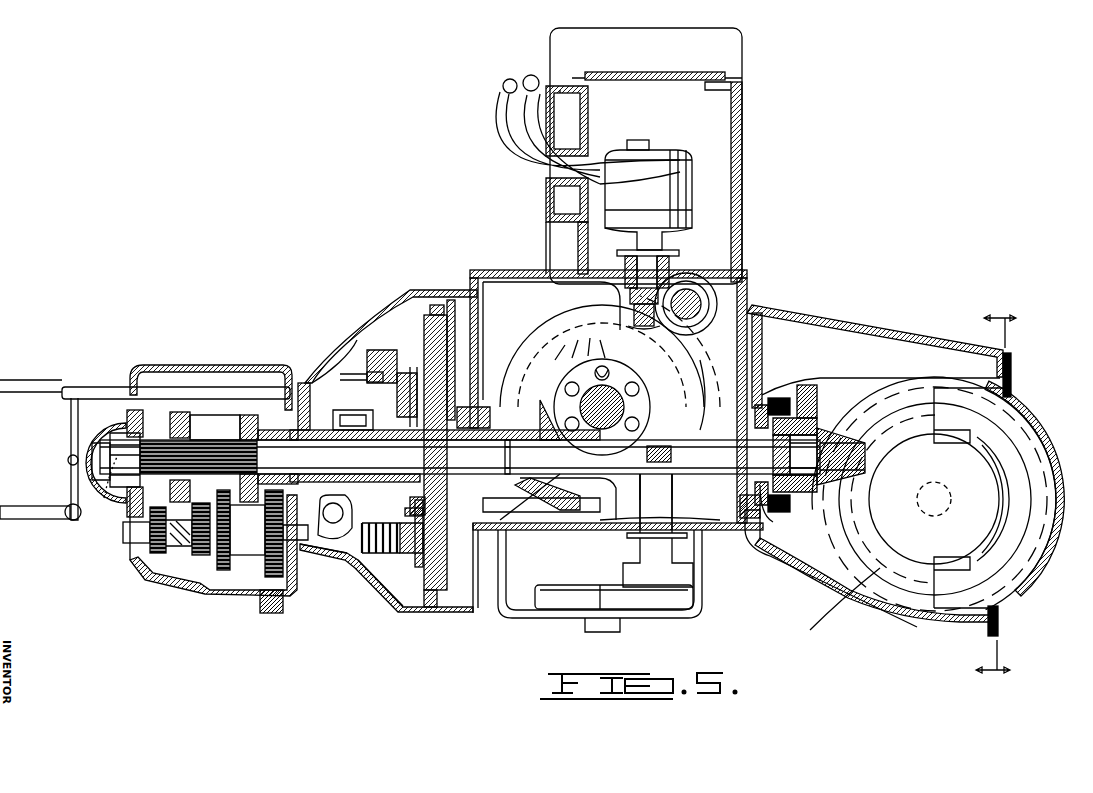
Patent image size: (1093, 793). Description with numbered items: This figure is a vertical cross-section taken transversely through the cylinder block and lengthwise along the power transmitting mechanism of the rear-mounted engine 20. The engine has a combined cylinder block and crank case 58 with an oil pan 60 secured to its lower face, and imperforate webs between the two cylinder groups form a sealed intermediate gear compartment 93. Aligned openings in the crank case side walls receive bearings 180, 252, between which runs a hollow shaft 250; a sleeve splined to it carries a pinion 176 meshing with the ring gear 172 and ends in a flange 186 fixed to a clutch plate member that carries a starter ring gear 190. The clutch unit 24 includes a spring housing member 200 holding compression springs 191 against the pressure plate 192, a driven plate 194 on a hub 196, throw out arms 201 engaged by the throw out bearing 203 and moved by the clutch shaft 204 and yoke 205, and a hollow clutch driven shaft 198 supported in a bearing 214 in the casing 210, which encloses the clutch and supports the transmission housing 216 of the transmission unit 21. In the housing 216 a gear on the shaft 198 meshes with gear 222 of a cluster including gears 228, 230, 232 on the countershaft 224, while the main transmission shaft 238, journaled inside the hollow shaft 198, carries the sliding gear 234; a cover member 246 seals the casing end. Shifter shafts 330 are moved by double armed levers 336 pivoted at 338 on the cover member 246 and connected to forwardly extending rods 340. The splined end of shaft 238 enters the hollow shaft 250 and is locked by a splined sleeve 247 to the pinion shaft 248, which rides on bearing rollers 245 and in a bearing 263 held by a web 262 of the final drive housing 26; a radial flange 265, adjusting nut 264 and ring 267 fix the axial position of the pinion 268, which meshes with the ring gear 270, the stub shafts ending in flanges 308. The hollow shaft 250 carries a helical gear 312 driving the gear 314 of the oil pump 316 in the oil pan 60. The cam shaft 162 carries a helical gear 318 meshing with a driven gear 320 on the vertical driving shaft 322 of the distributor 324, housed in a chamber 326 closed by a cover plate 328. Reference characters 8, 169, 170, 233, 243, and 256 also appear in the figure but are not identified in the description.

The section line 8- 8 is at (985, 492).
The engine 20 is at (748, 100).
The transmission unit 21 is at (150, 578).
The clutch unit 24 is at (392, 612).
The final drive housing 26 is at (832, 322).
The combined cylinder block and crank case 58 is at (570, 235).
The oil pan 60 is at (702, 558).
The intermediate gear compartment 93 is at (562, 535).
The cam shaft 162 is at (748, 280).
The hub 169 is at (553, 398).
The flange 170 is at (625, 372).
The ring gear 172 is at (575, 308).
The pinion 176 is at (515, 506).
The bearing 180 is at (490, 530).
The flange 186 is at (462, 535).
The ring gear 190 is at (438, 312).
The compression springs 191 is at (355, 565).
The pressure plate 192 is at (375, 565).
The driven plate 194 is at (420, 516).
The hub 196 is at (450, 350).
The clutch driven shaft 198 is at (336, 425).
The spring housing member 200 is at (412, 340).
The throw out arms 201 is at (360, 370).
The throw out bearing 203 is at (335, 520).
The clutch shaft 204 is at (353, 547).
The yoke 205 is at (340, 455).
The casing 210 is at (404, 320).
The bearing 214 is at (297, 390).
The transmission housing 216 is at (232, 367).
The gear 222 is at (347, 572).
The countershaft 224 is at (125, 532).
The gear 228 is at (204, 570).
The gear 230 is at (192, 565).
The gear 232 is at (140, 555).
The cap 233 is at (124, 430).
The sliding gear 234 is at (230, 440).
The main transmission shaft 238 is at (275, 432).
The bearing 243 is at (550, 482).
The bearing rollers 245 is at (560, 497).
The cover member 246 is at (104, 498).
The splined sleeve 247 is at (514, 458).
The pinion shaft 248 is at (832, 438).
The hollow shaft 250 is at (620, 500).
The bearing 252 is at (690, 385).
The bearing 256 is at (176, 410).
The web 262 is at (790, 344).
The bearing 263 is at (805, 425).
The adjusting nut 264 is at (788, 400).
The radial flange 265 is at (790, 392).
The ring 267 is at (782, 406).
The pinion 268 is at (866, 445).
The ring gear 270 is at (935, 600).
The flange 308 is at (845, 598).
The helical gear 312 is at (652, 430).
The driven gear 314 is at (672, 460).
The oil pump 316 is at (640, 548).
The helical gear 318 is at (695, 286).
The driven gear 320 is at (636, 300).
The vertical driving shaft 322 is at (590, 268).
The distributor 324 is at (693, 186).
The chamber 326 is at (728, 150).
The cover plate 328 is at (648, 54).
The shifter shafts 330 is at (120, 390).
The double armed levers 336 is at (70, 436).
The pivot 338 is at (66, 460).
The rod 340 is at (35, 510).